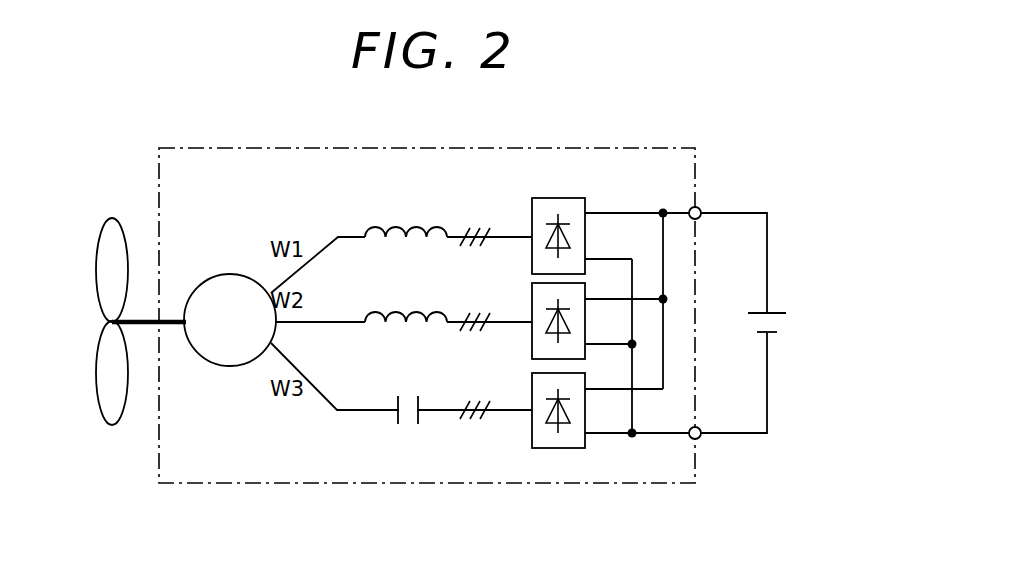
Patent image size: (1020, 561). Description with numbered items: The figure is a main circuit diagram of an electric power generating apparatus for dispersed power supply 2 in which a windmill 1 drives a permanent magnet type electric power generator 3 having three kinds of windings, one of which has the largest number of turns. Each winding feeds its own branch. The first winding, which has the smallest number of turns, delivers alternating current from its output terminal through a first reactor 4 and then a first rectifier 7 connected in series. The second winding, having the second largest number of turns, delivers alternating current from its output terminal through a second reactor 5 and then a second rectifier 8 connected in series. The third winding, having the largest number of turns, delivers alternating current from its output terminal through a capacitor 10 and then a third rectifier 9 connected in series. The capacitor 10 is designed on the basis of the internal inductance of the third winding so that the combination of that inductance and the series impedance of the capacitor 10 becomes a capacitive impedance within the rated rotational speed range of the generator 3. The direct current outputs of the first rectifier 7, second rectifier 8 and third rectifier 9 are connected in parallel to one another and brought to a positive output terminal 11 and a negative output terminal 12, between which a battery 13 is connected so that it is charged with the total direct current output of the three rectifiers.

The windmill 1 is at (113, 409).
The electric power generating apparatus for dispersed power supply 2 is at (565, 483).
The permanent magnet type electric power generator 3 is at (232, 274).
The first reactor 4 is at (411, 225).
The second reactor 5 is at (411, 311).
The first rectifier 7 is at (532, 201).
The second rectifier 8 is at (532, 295).
The third rectifier 9 is at (532, 437).
The capacitor 10 is at (408, 425).
The positive output terminal 11 is at (700, 208).
The negative output terminal 12 is at (700, 438).
The battery 13 is at (787, 325).